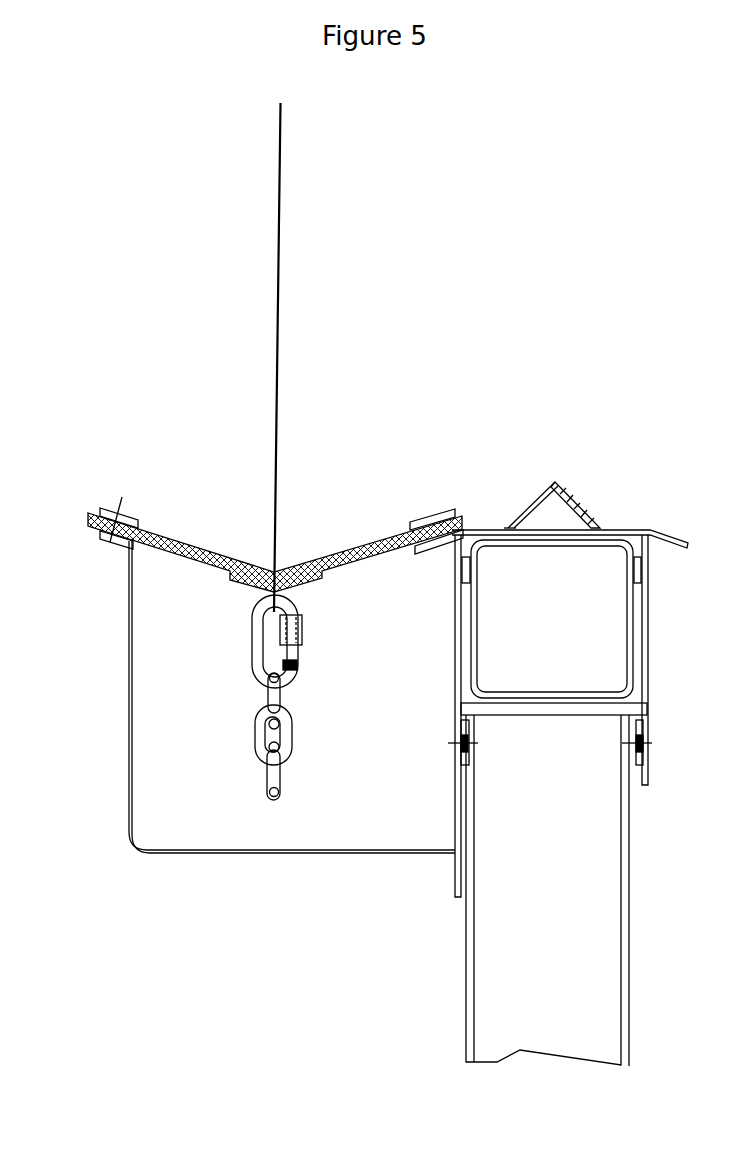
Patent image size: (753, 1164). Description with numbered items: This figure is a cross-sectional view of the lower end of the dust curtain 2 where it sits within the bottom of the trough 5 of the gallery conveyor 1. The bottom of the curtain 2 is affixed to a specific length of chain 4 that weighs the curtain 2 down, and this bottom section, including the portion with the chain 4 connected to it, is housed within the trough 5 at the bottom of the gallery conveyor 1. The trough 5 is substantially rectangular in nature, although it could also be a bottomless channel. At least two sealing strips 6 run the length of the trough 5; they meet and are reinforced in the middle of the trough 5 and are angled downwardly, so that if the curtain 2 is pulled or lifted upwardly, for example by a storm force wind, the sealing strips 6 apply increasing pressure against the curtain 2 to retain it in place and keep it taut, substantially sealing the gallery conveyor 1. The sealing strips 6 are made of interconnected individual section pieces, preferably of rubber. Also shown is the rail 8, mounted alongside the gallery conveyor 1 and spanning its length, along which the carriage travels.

The gallery conveyor 1 is at (465, 962).
The dust curtain 2 is at (277, 445).
The chain 4 is at (260, 748).
The trough 5 is at (128, 745).
The sealing strips 6 is at (348, 542).
The rail 8 is at (537, 502).